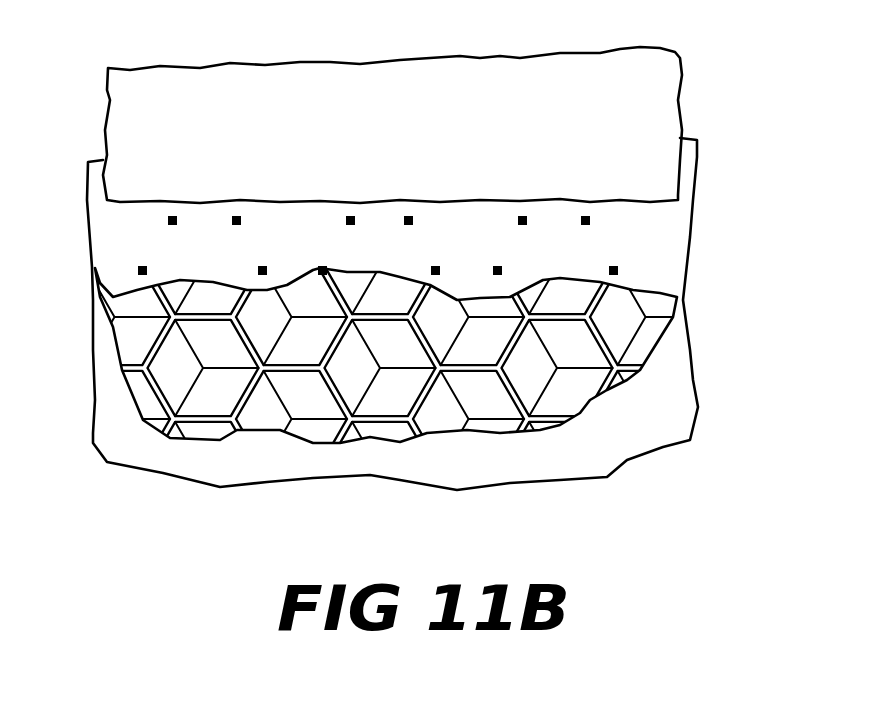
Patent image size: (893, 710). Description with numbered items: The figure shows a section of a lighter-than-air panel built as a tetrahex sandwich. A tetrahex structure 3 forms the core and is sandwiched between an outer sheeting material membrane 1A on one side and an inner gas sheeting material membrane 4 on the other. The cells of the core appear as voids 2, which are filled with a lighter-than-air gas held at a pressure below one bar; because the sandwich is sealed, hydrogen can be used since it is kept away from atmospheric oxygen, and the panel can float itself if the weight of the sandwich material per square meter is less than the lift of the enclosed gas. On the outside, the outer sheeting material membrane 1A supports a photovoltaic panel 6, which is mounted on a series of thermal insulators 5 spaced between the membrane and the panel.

The outer sheeting material membrane 1A is at (677, 252).
The voids 2 is at (348, 380).
The tetrahex structure 3 is at (505, 395).
The inner gas sheeting material membrane 4 is at (543, 468).
The thermal insulators 5 is at (616, 268).
The photovoltaic panel 6 is at (300, 82).